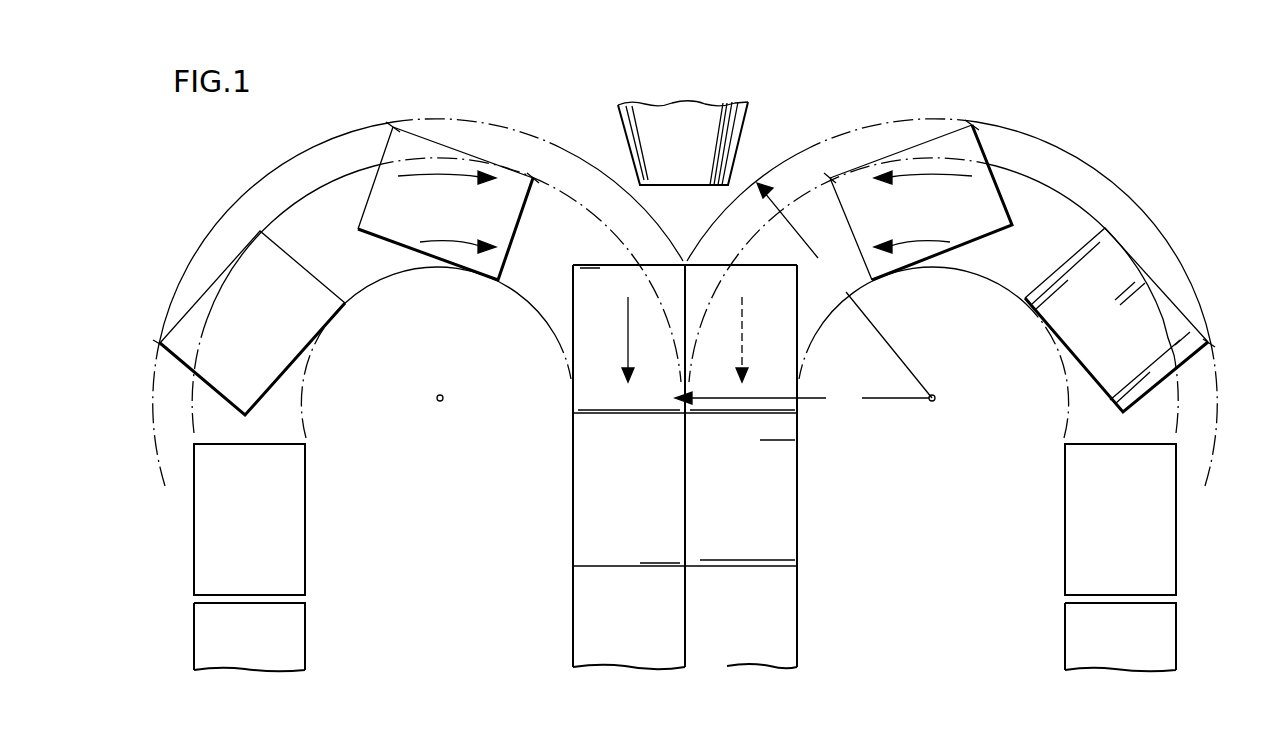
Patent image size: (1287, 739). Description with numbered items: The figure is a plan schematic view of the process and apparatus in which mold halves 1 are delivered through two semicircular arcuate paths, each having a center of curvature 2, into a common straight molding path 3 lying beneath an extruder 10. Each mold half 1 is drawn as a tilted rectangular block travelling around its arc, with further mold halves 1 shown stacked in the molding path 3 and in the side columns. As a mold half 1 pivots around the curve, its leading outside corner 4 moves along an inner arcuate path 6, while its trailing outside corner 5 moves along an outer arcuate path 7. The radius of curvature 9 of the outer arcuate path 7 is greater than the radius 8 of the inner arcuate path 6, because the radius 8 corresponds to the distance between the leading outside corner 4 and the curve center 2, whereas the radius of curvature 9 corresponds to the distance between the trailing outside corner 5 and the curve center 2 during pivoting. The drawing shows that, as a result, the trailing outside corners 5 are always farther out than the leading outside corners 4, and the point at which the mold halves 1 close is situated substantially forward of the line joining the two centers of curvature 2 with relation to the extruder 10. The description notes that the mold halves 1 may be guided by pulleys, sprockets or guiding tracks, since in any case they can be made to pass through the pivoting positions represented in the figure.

The mold half 1 is at (310, 318).
The center of curvature 2 is at (441, 402).
The molding path 3 is at (555, 612).
The leading outside corner 4 is at (533, 178).
The trailing outside corner 5 is at (393, 127).
The arcuate path 6 is at (295, 203).
The arcuate path 7 is at (223, 206).
The radius 8 is at (802, 401).
The radius of curvature 9 is at (844, 290).
The extruder 10 is at (670, 112).